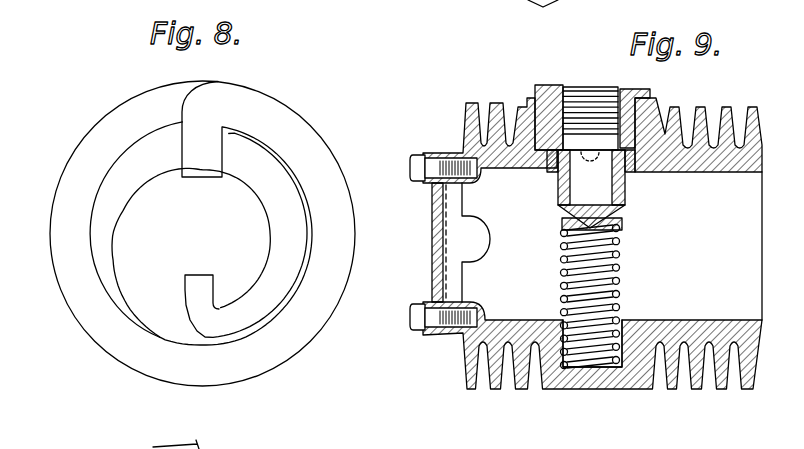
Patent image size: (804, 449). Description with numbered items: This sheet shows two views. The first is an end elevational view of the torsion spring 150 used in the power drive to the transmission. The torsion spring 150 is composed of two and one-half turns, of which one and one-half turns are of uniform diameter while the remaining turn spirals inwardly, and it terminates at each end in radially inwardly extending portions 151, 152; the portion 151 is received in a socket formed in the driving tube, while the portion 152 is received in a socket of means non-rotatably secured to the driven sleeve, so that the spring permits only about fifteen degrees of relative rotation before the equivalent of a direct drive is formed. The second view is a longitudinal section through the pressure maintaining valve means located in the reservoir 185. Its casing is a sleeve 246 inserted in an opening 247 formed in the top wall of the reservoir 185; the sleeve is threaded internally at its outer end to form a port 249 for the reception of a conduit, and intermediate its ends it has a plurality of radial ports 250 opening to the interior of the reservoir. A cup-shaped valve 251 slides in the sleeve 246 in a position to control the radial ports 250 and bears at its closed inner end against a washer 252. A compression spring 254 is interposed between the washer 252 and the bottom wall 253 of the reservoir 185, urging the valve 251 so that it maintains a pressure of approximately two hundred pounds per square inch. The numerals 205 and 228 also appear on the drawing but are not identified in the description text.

In FIG. 8, the torsion spring 150 is at (343, 200).
In FIG. 8, the radially inwardly extending portion 151 is at (192, 154).
In FIG. 8, the radially inwardly extending portion 152 is at (197, 285).
In FIG. 9, the reservoir 185 is at (697, 332).
In FIG. 9, the chamber 205 is at (636, 234).
In FIG. 9, the body head 228 is at (742, 173).
In FIG. 9, the sleeve 246 is at (557, 163).
In FIG. 9, the opening 247 is at (630, 170).
In FIG. 9, the port 249 is at (578, 95).
In FIG. 9, the radial ports 250 is at (560, 200).
In FIG. 9, the cup-shaped valve 251 is at (626, 198).
In FIG. 9, the washer 252 is at (560, 221).
In FIG. 9, the bottom wall 253 is at (630, 368).
In FIG. 9, the compression spring 254 is at (618, 270).